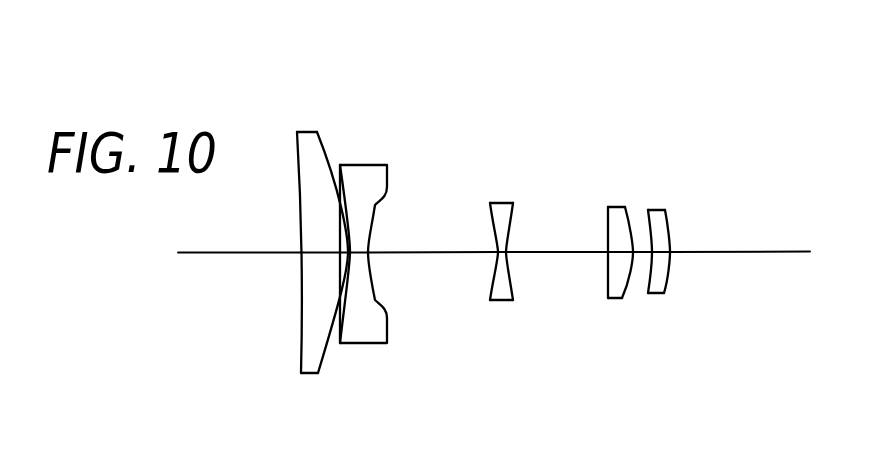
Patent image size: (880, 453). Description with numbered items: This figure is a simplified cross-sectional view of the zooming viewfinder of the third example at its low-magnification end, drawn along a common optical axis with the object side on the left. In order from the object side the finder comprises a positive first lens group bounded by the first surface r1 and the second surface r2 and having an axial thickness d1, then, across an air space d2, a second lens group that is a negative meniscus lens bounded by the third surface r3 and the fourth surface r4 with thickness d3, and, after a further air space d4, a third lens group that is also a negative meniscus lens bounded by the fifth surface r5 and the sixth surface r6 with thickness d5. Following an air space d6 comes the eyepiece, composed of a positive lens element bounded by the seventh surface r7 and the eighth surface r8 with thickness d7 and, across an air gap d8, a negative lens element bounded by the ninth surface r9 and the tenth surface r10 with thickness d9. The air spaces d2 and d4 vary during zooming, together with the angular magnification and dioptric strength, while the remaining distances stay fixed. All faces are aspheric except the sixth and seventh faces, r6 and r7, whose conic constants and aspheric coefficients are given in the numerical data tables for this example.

The first surface r1 is at (297, 135).
The second surface r2 is at (320, 133).
The third surface r3 is at (336, 164).
The fourth surface r4 is at (388, 197).
The fifth surface r5 is at (489, 212).
The sixth surface r6 is at (513, 211).
The seventh surface r7 is at (607, 208).
The eighth surface r8 is at (625, 207).
The ninth surface r9 is at (648, 212).
The tenth surface r10 is at (666, 211).
The first axial distance d1 is at (318, 253).
The second axial distance d2 is at (348, 255).
The third axial distance d3 is at (358, 253).
The fourth axial distance d4 is at (432, 253).
The fifth axial distance d5 is at (501, 253).
The sixth axial distance d6 is at (557, 253).
The seventh axial distance d7 is at (620, 253).
The eighth axial distance d8 is at (638, 253).
The ninth axial distance d9 is at (666, 253).